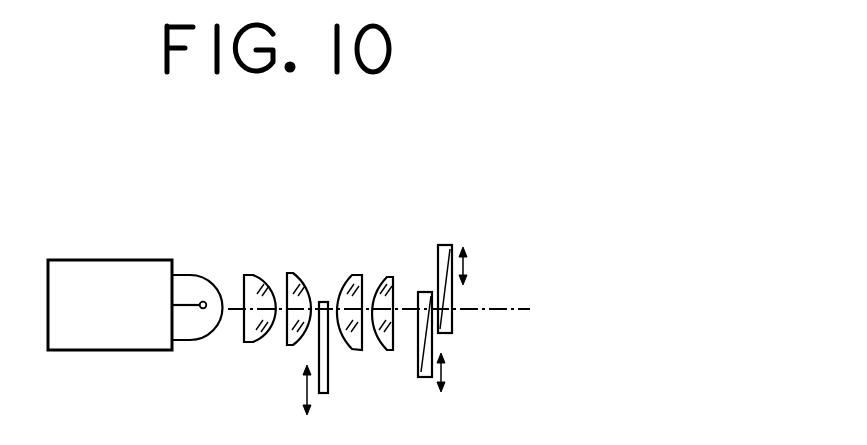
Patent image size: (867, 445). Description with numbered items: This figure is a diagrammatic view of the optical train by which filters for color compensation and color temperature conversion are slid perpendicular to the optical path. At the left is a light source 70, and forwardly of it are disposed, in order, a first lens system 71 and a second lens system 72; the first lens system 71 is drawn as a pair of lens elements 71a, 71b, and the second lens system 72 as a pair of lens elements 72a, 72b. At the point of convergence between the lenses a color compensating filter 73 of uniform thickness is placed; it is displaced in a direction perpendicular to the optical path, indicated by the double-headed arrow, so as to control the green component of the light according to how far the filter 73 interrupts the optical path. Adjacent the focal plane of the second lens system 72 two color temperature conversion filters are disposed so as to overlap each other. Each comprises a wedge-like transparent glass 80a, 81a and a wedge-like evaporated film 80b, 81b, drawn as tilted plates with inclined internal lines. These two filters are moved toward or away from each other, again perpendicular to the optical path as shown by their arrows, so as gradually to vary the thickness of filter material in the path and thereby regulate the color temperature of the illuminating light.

The light source 70 is at (192, 340).
The lens system 71 is at (268, 240).
The first lens of lens group 71 71a is at (257, 275).
The second lens of lens group 71 71b is at (298, 273).
The lens system 72 is at (401, 236).
The first lens of lens group 72 72a is at (355, 276).
The second lens of lens group 72 72b is at (388, 277).
The color compensating filter 73 is at (328, 373).
The wedge-like transparent glass 80a is at (422, 292).
The wedge-like evaporated film 80b is at (455, 317).
The wedge-like transparent glass 81a is at (450, 327).
The wedge-like evaporated film 81b is at (480, 298).